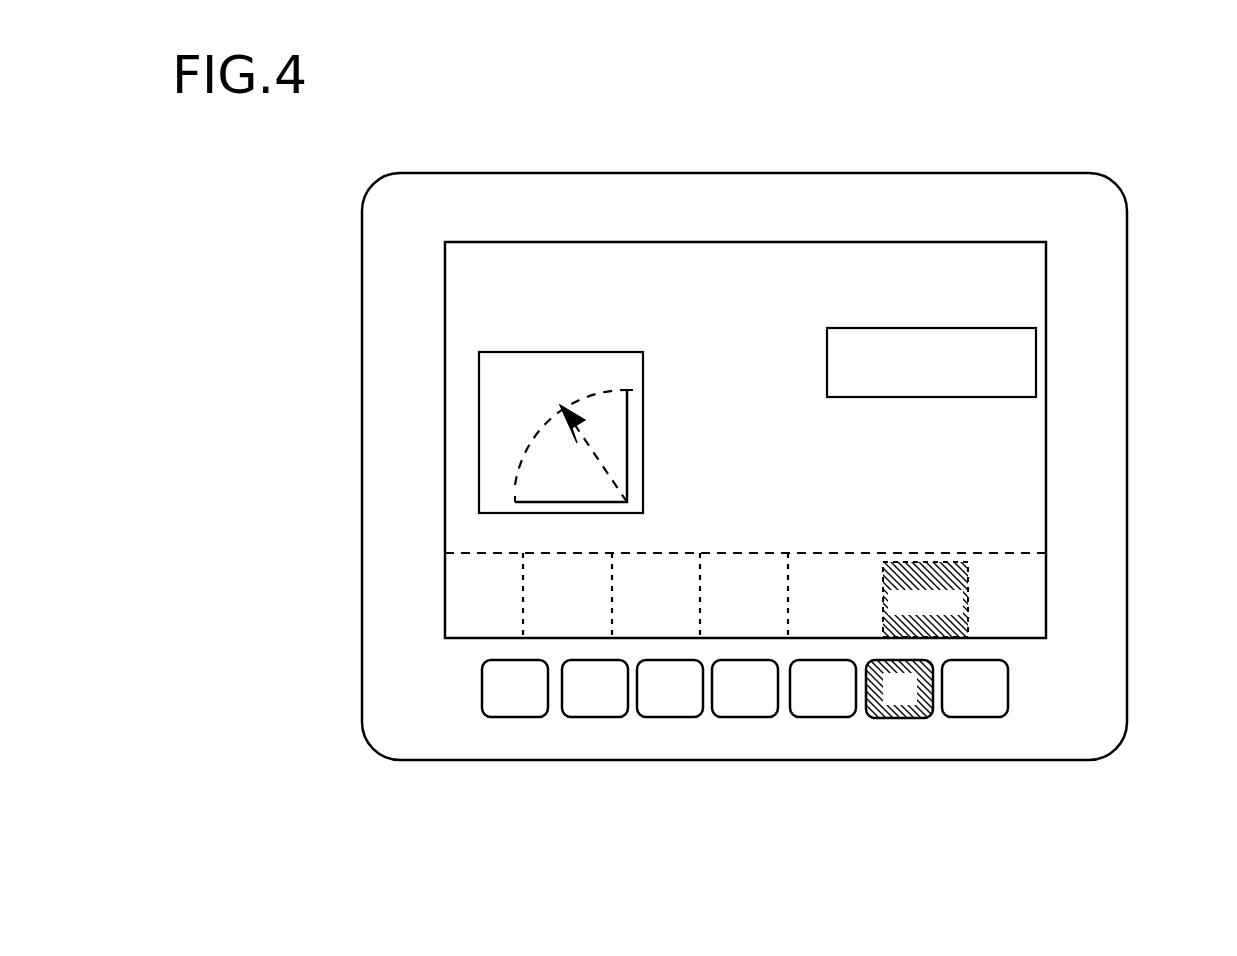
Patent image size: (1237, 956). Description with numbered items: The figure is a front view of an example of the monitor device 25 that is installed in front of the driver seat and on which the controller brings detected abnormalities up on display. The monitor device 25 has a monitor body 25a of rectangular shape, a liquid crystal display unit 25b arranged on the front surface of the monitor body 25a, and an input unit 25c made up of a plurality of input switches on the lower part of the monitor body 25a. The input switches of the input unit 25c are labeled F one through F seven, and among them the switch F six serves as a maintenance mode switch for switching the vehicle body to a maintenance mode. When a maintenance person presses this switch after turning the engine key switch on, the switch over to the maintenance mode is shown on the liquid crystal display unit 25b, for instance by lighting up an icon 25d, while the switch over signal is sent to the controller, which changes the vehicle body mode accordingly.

The monitor device 25 is at (362, 470).
The monitor body 25a is at (885, 175).
The liquid crystal display unit 25b is at (988, 437).
The input unit 25c is at (942, 732).
The icon 25d is at (968, 602).